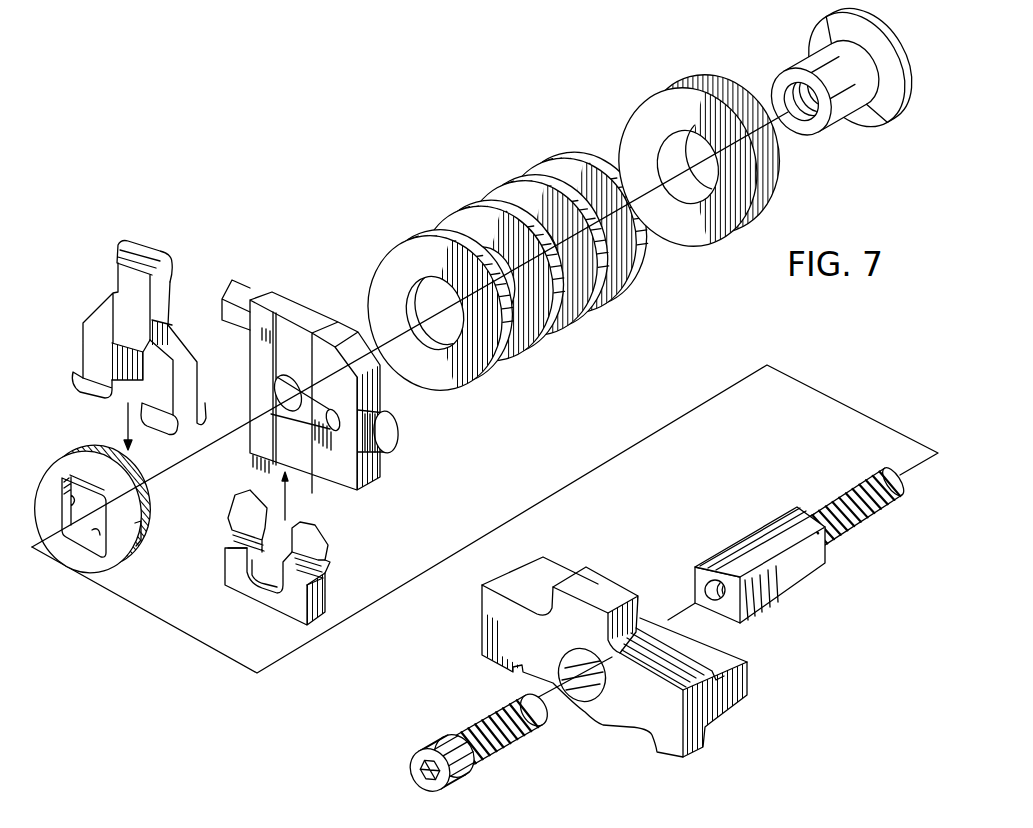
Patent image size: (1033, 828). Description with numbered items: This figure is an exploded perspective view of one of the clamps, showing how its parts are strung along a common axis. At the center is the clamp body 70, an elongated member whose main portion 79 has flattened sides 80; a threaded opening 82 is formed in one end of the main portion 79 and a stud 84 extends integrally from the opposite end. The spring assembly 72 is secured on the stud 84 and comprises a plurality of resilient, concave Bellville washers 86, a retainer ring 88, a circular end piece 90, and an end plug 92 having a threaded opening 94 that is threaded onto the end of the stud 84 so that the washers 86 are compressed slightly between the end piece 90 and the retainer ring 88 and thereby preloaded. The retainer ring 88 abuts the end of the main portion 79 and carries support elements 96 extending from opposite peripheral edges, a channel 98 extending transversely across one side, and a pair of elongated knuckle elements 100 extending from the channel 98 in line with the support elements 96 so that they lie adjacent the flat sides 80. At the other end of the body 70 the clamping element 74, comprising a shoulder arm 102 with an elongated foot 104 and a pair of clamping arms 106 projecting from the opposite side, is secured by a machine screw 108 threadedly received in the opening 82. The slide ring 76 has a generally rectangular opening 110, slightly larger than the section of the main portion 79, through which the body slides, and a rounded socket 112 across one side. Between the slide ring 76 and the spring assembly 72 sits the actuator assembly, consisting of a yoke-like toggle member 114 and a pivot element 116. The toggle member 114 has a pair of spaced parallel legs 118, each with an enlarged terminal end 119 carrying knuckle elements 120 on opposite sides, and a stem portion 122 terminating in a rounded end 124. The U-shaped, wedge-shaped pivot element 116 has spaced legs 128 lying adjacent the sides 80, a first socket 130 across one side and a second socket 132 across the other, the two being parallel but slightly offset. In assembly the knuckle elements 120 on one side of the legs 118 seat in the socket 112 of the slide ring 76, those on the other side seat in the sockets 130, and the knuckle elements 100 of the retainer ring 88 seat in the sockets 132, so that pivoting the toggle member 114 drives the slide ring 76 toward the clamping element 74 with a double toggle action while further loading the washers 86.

The clamp body 70 is at (750, 546).
The spring assembly 72 is at (454, 184).
The clamping element 74 is at (583, 386).
The slide ring 76 is at (106, 498).
The main portion 79 is at (790, 521).
The flattened sides 80 is at (801, 562).
The threaded opening 82 is at (723, 608).
The stud 84 is at (866, 532).
The Bellville washers 86 is at (598, 312).
The retainer ring 88 is at (339, 382).
The circular end piece 90 is at (642, 103).
The end plug 92 is at (841, 99).
The threaded opening 94 is at (806, 128).
The support elements 96 is at (399, 433).
The channel 98 is at (275, 320).
The knuckle elements 100 is at (320, 402).
The shoulder arm 102 is at (577, 612).
The foot 104 is at (648, 607).
The clamping arms 106 is at (677, 742).
The machine screw 108 is at (470, 777).
The rectangular opening 110 is at (97, 535).
The socket 112 is at (143, 534).
The toggle member 114 is at (136, 345).
The pivot element 116 is at (321, 570).
The legs 118 is at (93, 327).
The enlarged terminal end 119 is at (123, 380).
The knuckle elements 120 is at (200, 398).
The stem portion 122 is at (163, 304).
The rounded end 124 is at (140, 252).
The legs 128 is at (328, 550).
The first socket 130 is at (316, 578).
The second socket 132 is at (333, 561).